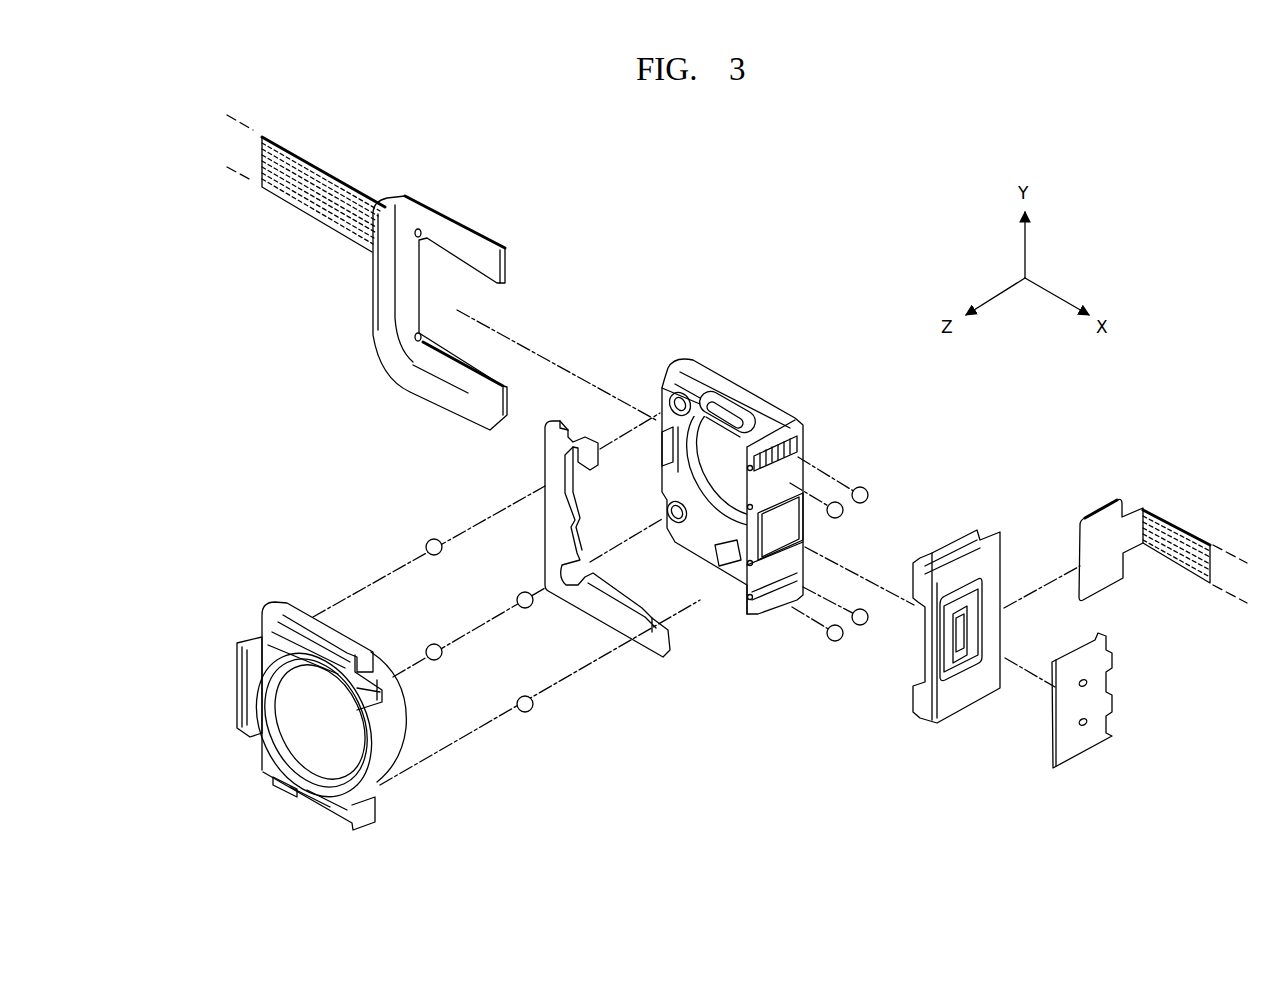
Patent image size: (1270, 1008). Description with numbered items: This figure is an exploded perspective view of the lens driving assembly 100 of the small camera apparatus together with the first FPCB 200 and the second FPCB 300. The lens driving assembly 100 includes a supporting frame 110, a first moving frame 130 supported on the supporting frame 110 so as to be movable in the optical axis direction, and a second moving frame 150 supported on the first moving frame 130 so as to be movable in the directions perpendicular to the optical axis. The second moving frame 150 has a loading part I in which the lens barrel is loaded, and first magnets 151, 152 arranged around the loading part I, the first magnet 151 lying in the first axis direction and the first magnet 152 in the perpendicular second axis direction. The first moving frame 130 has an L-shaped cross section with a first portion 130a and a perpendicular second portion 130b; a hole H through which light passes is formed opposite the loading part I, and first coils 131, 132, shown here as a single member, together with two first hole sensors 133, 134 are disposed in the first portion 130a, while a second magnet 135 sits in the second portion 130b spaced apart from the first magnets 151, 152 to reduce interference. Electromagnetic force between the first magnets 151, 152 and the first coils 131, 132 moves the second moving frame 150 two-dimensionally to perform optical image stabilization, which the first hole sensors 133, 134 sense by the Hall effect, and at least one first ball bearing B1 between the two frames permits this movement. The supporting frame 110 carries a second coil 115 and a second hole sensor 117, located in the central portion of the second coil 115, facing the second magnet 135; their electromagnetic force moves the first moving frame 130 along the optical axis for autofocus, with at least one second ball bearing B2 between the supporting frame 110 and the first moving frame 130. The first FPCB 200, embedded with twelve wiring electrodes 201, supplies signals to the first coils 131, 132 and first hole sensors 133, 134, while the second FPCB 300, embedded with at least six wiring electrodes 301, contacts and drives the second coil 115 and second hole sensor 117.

The lens driving assembly 100 is at (991, 688).
The supporting frame 110 is at (978, 659).
The second coil 115 is at (953, 667).
The second hole sensor 117 is at (962, 630).
The first moving frame 130 is at (743, 454).
The first portion 130a is at (749, 394).
The second portion 130b is at (790, 438).
The hole H is at (733, 452).
The first coil 131 is at (570, 565).
The first coil 132 is at (550, 498).
The first hole sensor 133 is at (722, 555).
The first hole sensor 134 is at (665, 448).
The second magnet 135 is at (795, 527).
The second moving frame 150 is at (346, 728).
The first magnet 151 is at (318, 810).
The first magnet 152 is at (243, 684).
The loading part I is at (307, 737).
The first flexible printed circuit board 200 is at (408, 186).
The wiring electrodes 201 is at (318, 176).
The second flexible printed circuit board 300 is at (1163, 564).
The wiring electrodes 301 is at (1180, 537).
The first ball bearing B1 is at (527, 712).
The second ball bearing B2 is at (866, 489).